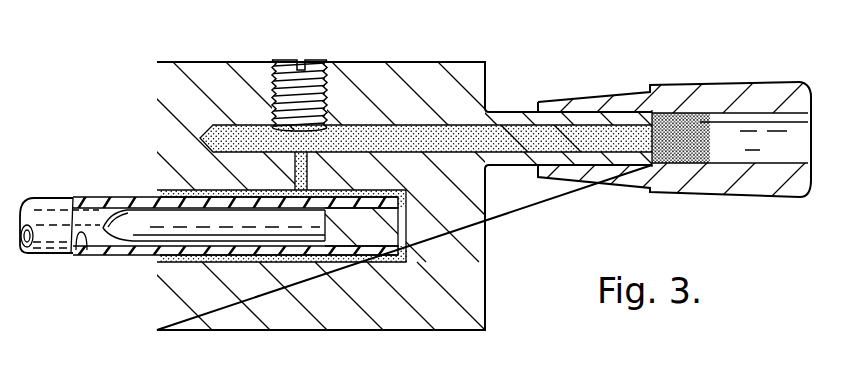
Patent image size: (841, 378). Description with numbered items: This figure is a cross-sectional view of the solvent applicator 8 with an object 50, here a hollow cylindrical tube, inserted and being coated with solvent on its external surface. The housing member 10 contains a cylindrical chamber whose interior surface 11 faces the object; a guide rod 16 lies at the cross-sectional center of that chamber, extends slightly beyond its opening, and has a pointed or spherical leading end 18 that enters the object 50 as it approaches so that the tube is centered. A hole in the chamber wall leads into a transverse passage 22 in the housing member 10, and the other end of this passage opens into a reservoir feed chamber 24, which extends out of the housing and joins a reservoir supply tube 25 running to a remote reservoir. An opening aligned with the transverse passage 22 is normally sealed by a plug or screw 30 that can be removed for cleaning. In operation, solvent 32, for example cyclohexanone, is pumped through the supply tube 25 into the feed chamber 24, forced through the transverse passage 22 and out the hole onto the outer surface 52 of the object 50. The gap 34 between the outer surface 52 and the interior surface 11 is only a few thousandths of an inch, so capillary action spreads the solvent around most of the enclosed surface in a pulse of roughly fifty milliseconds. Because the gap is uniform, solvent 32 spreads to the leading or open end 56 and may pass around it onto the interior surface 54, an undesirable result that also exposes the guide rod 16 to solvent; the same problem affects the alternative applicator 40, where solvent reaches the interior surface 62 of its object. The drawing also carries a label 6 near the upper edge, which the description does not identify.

The connector 6 is at (690, 0).
The present invention 8 is at (177, 53).
The housing member 10 is at (485, 330).
The interior surface 11 is at (363, 263).
The guide rod 16 is at (182, 209).
The leading end 18 is at (101, 252).
The transverse passage 22 is at (308, 171).
The reservoir feed chamber 24 is at (377, 146).
The reservoir supply tube 25 is at (740, 133).
The plug or screw 30 is at (290, 68).
The solvent 32 is at (563, 138).
The gap 34 is at (182, 190).
The applicator 40 is at (537, 0).
The object 50 is at (50, 194).
The outer surface 52 is at (118, 194).
The interior surface 54 is at (82, 251).
The leading or open end 56 is at (407, 195).
The interior surface 62 is at (396, 0).